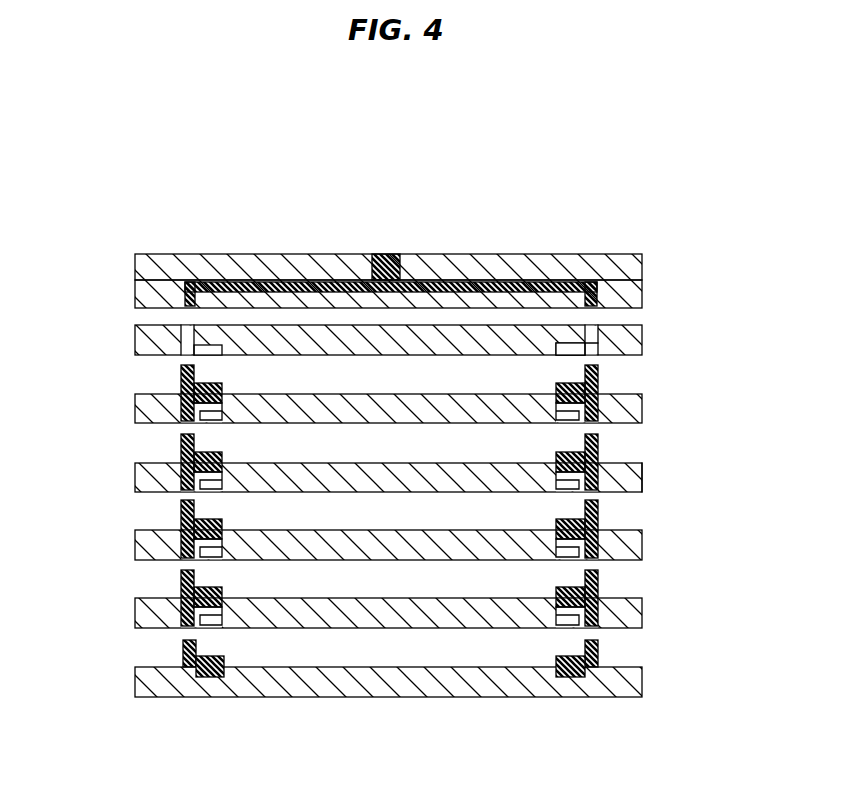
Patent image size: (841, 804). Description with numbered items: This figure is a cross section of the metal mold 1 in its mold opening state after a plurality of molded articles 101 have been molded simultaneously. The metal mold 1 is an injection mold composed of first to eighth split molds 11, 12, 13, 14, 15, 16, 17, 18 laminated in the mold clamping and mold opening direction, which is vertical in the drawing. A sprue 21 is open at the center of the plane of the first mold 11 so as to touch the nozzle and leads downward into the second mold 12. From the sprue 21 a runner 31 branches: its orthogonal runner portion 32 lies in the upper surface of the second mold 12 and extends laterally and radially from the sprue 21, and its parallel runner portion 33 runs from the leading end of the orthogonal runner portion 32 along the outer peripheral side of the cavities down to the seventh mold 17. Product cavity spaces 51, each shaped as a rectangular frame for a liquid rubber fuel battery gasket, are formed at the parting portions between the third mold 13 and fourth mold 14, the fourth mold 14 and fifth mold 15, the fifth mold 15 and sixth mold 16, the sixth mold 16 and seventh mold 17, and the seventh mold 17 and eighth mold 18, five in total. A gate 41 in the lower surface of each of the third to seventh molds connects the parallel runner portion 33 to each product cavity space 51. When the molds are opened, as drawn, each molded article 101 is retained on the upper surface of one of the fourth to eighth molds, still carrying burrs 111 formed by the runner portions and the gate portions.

The metal mold 1 is at (244, 228).
The first mold 11 is at (135, 265).
The second mold 12 is at (135, 296).
The third mold 13 is at (135, 345).
The fourth mold 14 is at (137, 412).
The fifth mold 15 is at (137, 481).
The sixth mold 16 is at (137, 548).
The seventh mold 17 is at (137, 613).
The eighth mold 18 is at (137, 688).
The sprue 21 is at (386, 254).
The runner 31 is at (432, 254).
The orthogonal runner portion 32 is at (493, 254).
The parallel runner portion 33 is at (643, 480).
The gate 41 is at (602, 351).
The product cavity space 51 is at (562, 343).
The molded article 101 is at (601, 408).
The burr 111 is at (601, 370).